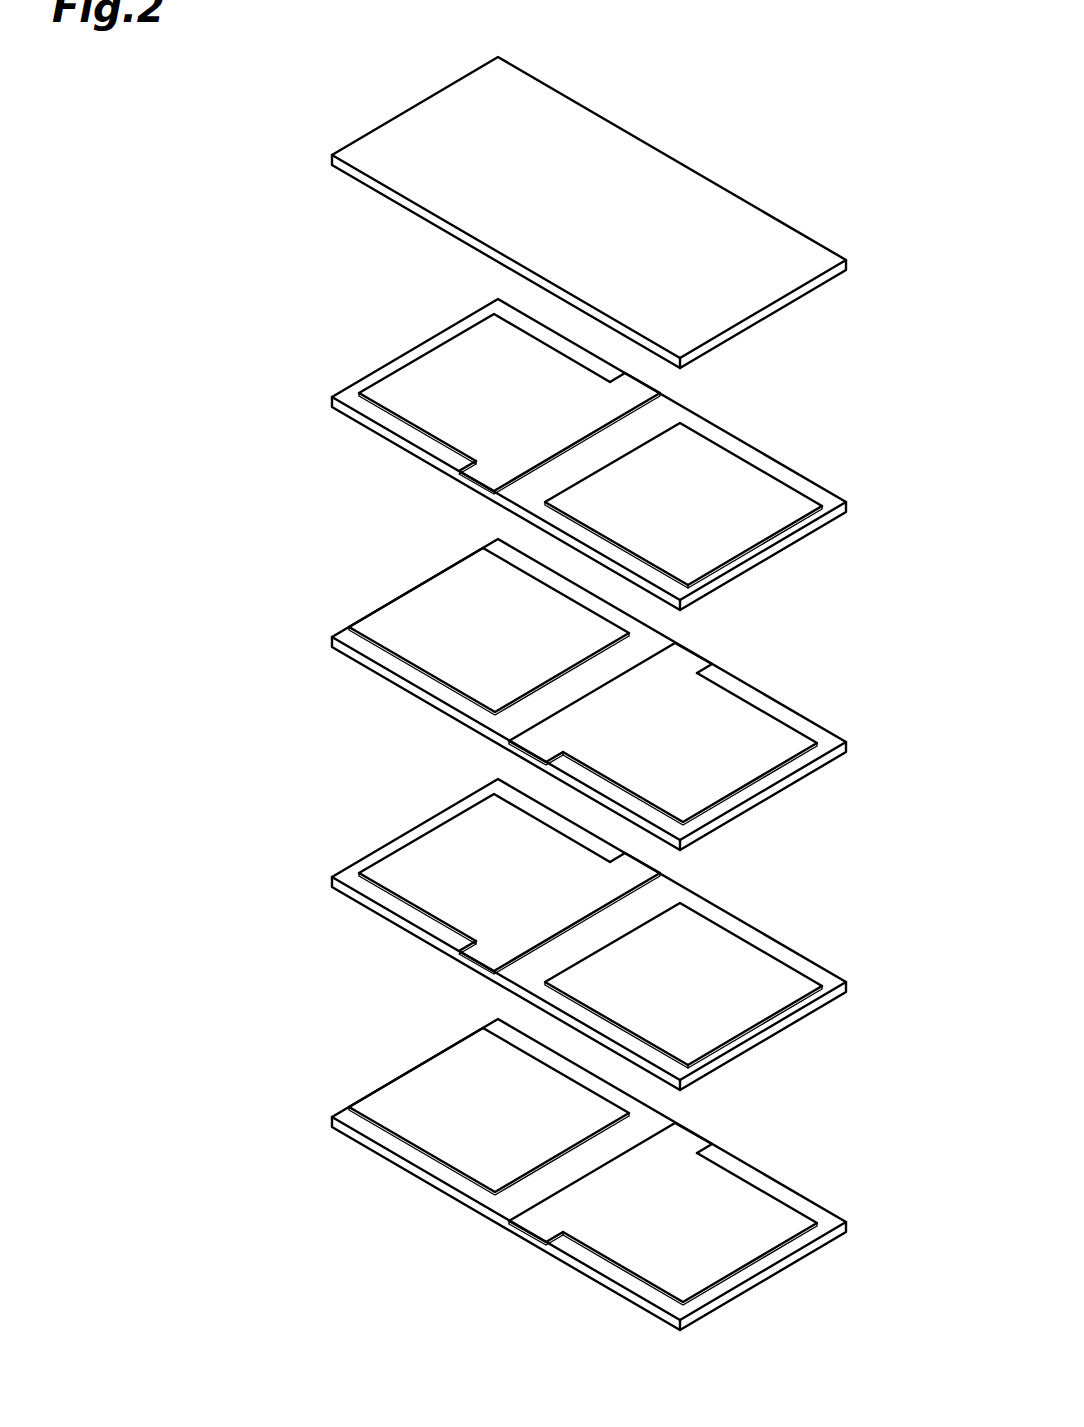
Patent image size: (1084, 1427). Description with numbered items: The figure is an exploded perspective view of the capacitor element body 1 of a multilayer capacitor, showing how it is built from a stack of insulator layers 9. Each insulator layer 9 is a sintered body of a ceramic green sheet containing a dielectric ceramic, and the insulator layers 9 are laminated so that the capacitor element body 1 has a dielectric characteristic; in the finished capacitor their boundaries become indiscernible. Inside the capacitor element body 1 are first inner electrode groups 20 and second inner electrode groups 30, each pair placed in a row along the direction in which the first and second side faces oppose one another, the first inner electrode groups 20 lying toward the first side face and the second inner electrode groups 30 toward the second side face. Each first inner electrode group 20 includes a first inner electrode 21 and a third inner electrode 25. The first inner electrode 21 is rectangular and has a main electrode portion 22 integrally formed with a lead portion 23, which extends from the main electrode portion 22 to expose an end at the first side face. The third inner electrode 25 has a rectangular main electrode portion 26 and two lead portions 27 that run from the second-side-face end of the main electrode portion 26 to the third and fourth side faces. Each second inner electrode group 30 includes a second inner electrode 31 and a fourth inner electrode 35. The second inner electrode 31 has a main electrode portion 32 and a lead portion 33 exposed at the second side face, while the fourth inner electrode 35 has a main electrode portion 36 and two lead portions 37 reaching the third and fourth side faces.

The capacitor element body 1 is at (242, 50).
The insulator layer 9 is at (350, 177).
The first inner electrode group 20 is at (328, 477).
The first inner electrode 21 is at (472, 855).
The main electrode portion 22 is at (480, 645).
The lead portion 23 is at (413, 598).
The third inner electrode 25 is at (541, 639).
The main electrode portion 26 is at (485, 387).
The lead portion 27 is at (632, 384).
The second inner electrode group 30 is at (878, 565).
The second inner electrode 31 is at (712, 743).
The main electrode portion 32 is at (677, 490).
The lead portion 33 is at (742, 540).
The fourth inner electrode 35 is at (647, 965).
The main electrode portion 36 is at (698, 745).
The lead portion 37 is at (697, 652).